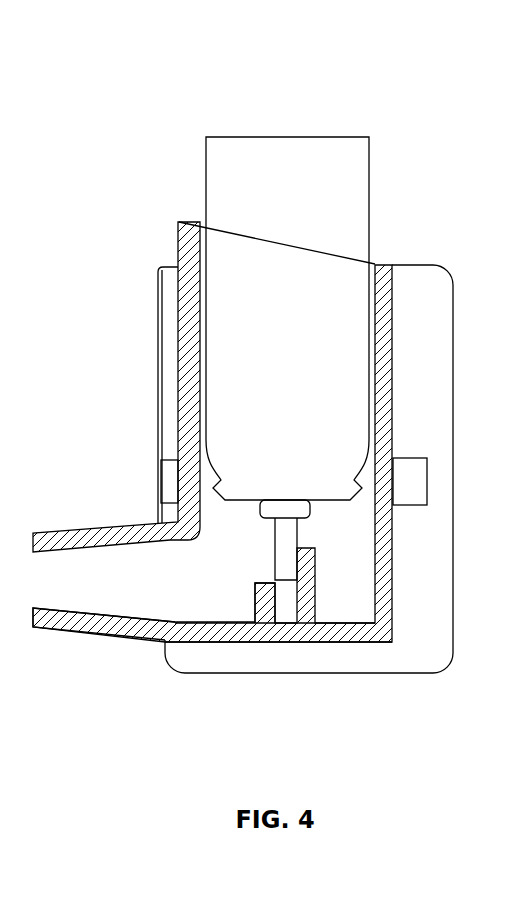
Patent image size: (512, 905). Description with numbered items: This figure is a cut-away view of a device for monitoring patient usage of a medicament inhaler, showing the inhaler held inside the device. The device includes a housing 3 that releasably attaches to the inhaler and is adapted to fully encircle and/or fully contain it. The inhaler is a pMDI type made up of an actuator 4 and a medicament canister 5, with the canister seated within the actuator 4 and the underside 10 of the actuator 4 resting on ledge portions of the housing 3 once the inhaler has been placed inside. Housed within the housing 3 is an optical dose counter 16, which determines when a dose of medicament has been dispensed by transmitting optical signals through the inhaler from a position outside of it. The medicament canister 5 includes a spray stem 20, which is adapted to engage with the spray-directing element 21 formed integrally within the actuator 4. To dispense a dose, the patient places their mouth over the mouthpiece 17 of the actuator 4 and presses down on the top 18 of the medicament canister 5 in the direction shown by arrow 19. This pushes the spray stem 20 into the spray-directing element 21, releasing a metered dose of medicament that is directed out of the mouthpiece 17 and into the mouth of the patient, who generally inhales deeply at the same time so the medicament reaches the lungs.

The housing 3 is at (440, 348).
The actuator 4 is at (392, 293).
The medicament canister 5 is at (352, 200).
The underside of the actuator 10 is at (341, 650).
The optical dose counter 16 is at (154, 482).
The mouthpiece 17 is at (64, 630).
The top of the medicament canister 18 is at (249, 112).
The arrow 19 is at (129, 387).
The spray stem 20 is at (297, 536).
The spray-directing element 21 is at (251, 584).